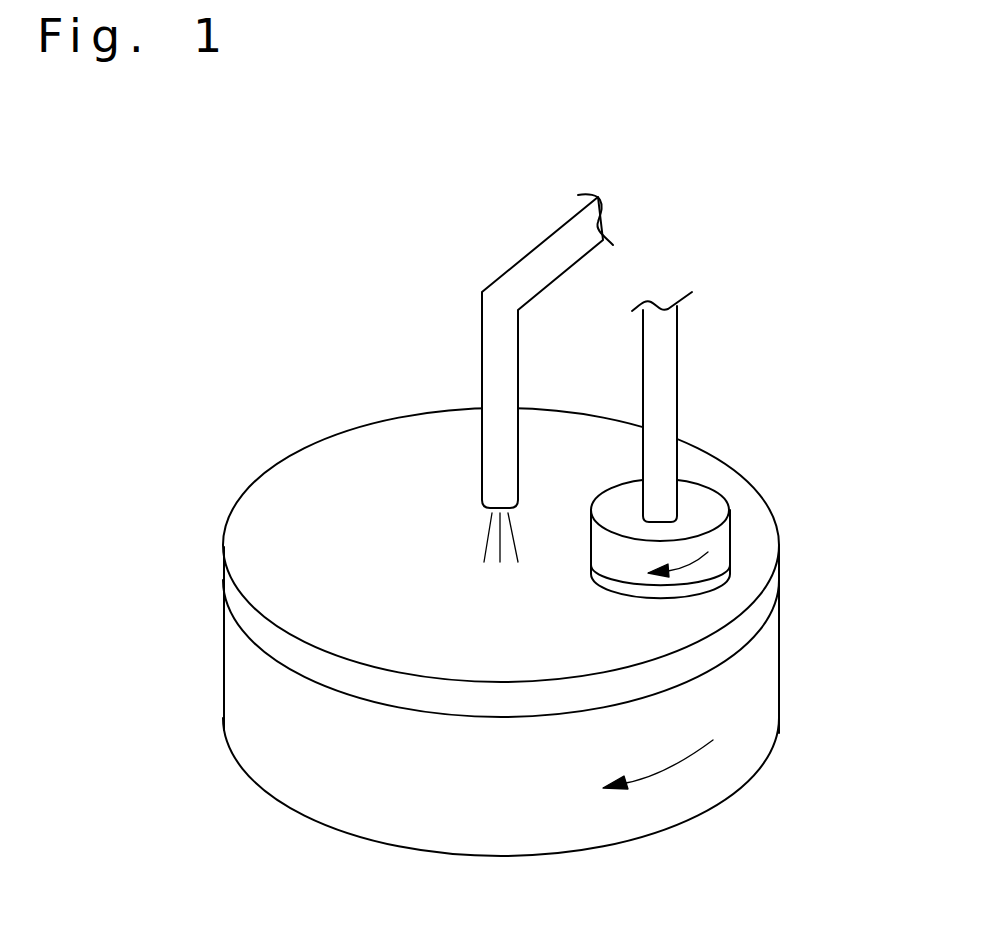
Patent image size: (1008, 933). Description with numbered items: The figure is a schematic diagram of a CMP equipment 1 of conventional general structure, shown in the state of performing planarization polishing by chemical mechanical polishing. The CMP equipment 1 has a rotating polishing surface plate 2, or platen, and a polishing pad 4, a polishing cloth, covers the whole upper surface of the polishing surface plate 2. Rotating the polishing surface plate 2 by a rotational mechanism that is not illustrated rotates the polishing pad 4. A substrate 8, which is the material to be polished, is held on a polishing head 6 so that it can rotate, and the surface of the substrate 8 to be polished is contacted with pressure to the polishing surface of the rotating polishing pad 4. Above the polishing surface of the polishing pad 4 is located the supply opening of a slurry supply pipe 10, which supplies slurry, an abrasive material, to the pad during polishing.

The CMP equipment 1 is at (342, 340).
The polishing surface plate 2 is at (762, 700).
The polishing pad 4 is at (772, 594).
The polishing head 6 is at (710, 490).
The substrate 8 is at (712, 593).
The slurry supply pipe 10 is at (527, 253).